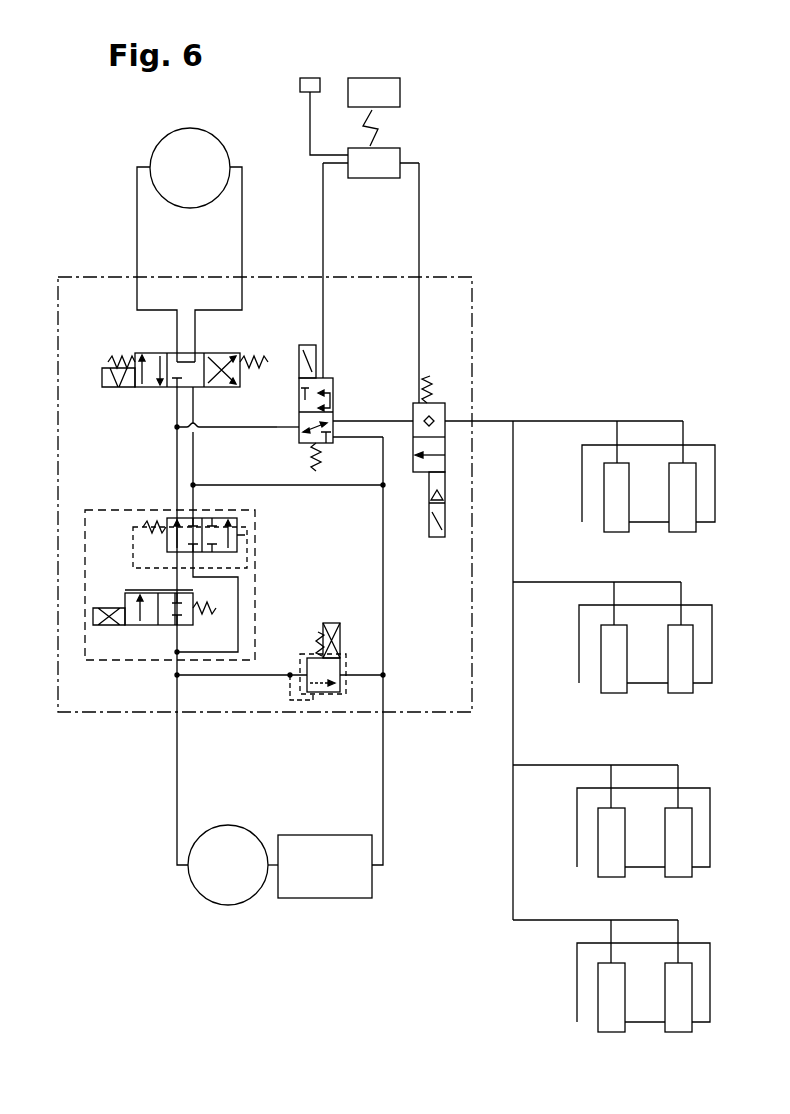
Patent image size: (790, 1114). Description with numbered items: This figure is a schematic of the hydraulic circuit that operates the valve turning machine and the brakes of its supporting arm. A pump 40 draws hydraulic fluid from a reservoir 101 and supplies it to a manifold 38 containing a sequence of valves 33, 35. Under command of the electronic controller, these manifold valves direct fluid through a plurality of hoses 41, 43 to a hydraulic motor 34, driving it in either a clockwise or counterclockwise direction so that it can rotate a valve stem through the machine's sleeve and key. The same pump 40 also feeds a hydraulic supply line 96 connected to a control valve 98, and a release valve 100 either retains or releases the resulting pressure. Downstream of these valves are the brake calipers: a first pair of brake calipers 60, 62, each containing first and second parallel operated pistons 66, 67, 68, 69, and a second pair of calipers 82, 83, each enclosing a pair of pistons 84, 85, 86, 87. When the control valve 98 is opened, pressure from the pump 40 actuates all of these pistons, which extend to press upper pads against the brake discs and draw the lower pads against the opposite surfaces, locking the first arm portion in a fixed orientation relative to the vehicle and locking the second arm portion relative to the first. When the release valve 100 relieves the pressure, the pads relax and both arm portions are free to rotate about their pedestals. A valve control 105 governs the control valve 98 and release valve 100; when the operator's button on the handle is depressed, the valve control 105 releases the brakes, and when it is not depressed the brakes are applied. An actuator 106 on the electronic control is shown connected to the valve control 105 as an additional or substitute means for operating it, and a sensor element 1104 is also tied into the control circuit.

The hydraulic motor 34 is at (190, 168).
The hose 41 is at (137, 206).
The hose 43 is at (242, 206).
The valve 35 is at (150, 353).
The hydraulic supply line 96 is at (290, 427).
The control valve 98 is at (333, 385).
The release valve 100 is at (445, 408).
The valve control 105 is at (400, 157).
The actuator 106 is at (400, 98).
The sensor 1104 is at (300, 85).
The valve 33 is at (146, 660).
The manifold 38 is at (158, 712).
The pump 40 is at (228, 865).
The reservoir 101 is at (320, 866).
The brake caliper 60 is at (582, 468).
The piston 66 is at (604, 510).
The piston 67 is at (669, 512).
The brake caliper 62 is at (579, 638).
The piston 68 is at (601, 672).
The piston 69 is at (668, 674).
The caliper 82 is at (577, 838).
The piston 84 is at (598, 856).
The piston 85 is at (665, 858).
The caliper 83 is at (577, 965).
The piston 86 is at (598, 1013).
The piston 87 is at (665, 1013).